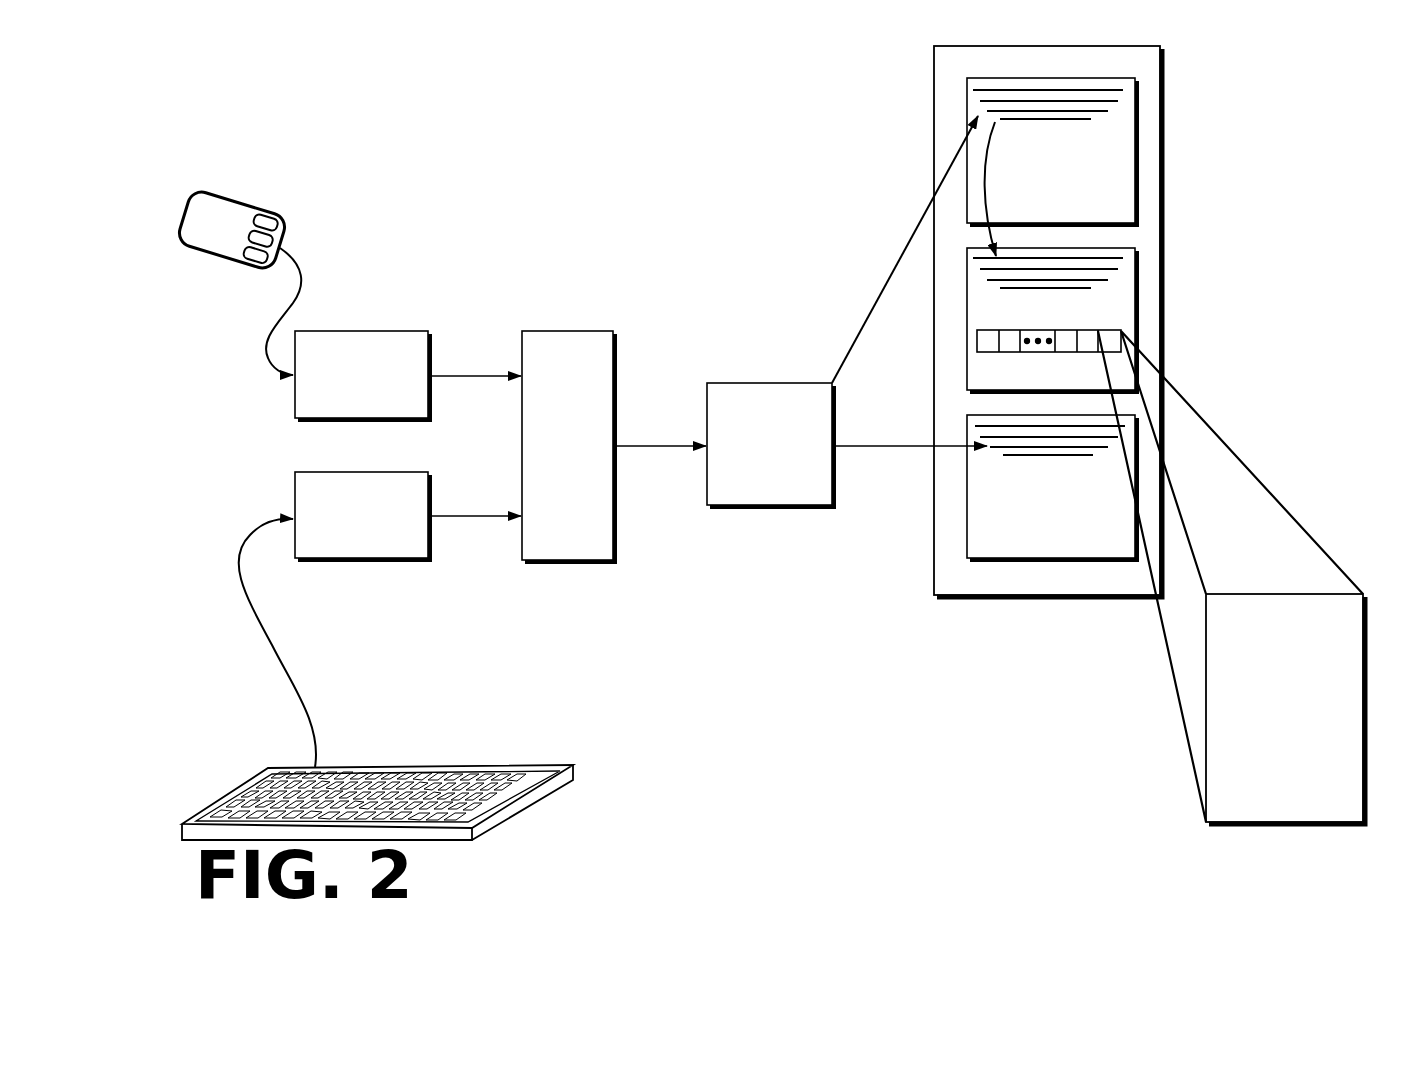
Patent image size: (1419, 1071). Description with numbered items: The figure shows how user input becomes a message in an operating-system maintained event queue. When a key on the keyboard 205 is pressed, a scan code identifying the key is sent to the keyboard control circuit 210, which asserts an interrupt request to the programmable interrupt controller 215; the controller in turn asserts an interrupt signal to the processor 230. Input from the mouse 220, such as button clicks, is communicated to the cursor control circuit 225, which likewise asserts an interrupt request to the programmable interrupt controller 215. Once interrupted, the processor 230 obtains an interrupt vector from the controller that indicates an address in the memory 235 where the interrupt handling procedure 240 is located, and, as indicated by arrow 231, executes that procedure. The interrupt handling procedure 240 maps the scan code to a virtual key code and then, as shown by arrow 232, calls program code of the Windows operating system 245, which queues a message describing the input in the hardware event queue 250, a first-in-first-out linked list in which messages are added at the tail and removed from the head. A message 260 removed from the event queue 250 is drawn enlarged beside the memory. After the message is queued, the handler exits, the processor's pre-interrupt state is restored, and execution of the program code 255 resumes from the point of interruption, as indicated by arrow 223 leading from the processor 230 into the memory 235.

The keyboard 205 is at (547, 803).
The keyboard control circuit 210 is at (378, 558).
The programmable interrupt controller 215 is at (597, 560).
The mouse 220 is at (280, 208).
The arrow to display window 223 is at (878, 446).
The cursor control circuit 225 is at (372, 331).
The processor 230 is at (790, 495).
The arrow 231 is at (899, 294).
The arrow 232 is at (1015, 189).
The memory 235 is at (1157, 59).
The interrupt handling procedure 240 is at (1120, 136).
The Windows 3.x operating system 245 is at (1120, 269).
The hardware event queue 250 is at (1085, 330).
The program code 255 is at (960, 496).
The message 260 is at (1355, 608).